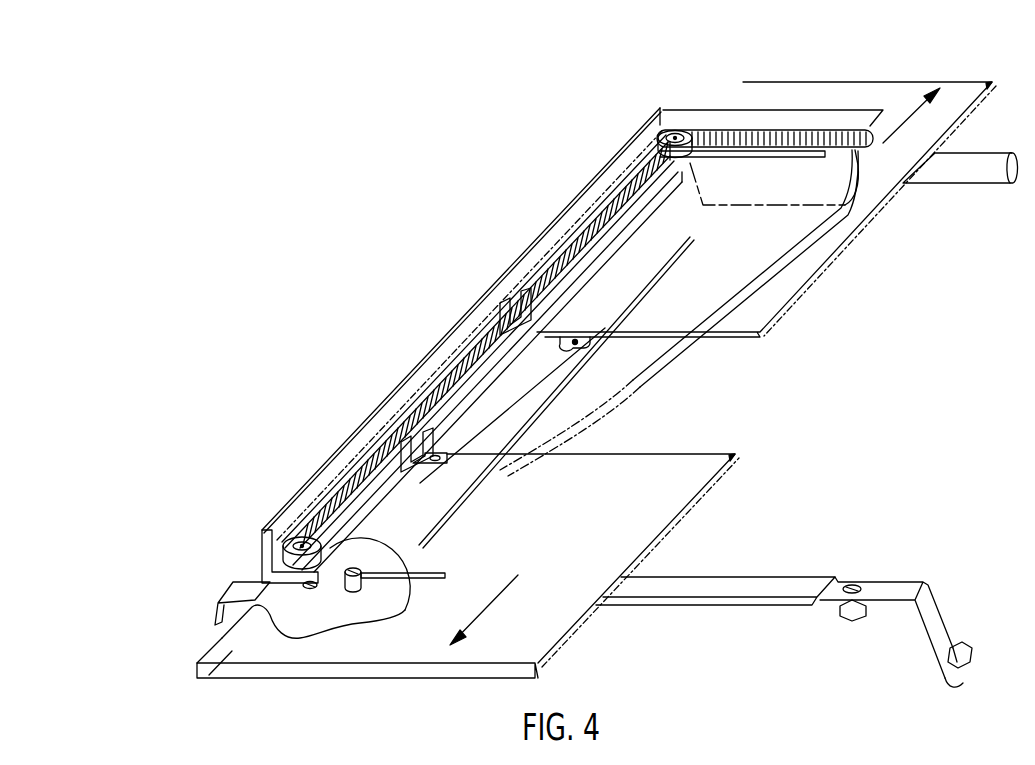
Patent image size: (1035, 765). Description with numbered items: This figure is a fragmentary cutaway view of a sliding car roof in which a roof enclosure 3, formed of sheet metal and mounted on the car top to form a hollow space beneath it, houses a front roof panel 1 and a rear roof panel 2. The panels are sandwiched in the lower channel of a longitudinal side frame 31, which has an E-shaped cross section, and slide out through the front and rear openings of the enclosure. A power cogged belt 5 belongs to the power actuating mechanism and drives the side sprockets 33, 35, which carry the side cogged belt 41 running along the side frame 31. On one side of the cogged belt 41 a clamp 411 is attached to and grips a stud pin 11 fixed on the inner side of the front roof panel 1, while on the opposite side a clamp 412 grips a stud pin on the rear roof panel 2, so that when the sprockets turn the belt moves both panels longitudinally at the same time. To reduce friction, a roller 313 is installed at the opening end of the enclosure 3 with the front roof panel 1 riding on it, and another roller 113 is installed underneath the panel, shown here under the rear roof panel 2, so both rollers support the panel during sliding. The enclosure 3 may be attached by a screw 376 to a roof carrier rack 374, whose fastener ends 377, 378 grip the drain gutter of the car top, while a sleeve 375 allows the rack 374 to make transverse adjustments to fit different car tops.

The front roof panel 1 is at (243, 633).
The rear roof panel 2 is at (787, 103).
The roof enclosure 3 is at (760, 262).
The power cogged belt 5 is at (713, 128).
The stud pin 11 is at (434, 452).
The side frame 31 is at (261, 554).
The side sprocket 33 is at (290, 538).
The side sprocket 35 is at (662, 108).
The side cogged belt 41 is at (343, 505).
The roller 113 is at (590, 347).
The roller 313 is at (352, 580).
The roof carrier rack 374 is at (892, 583).
The sleeve 375 is at (776, 577).
The screw 376 is at (233, 585).
The fastener end 377 is at (943, 681).
The fastener end 378 is at (962, 652).
The clamp 411 is at (410, 428).
The clamp 412 is at (514, 292).